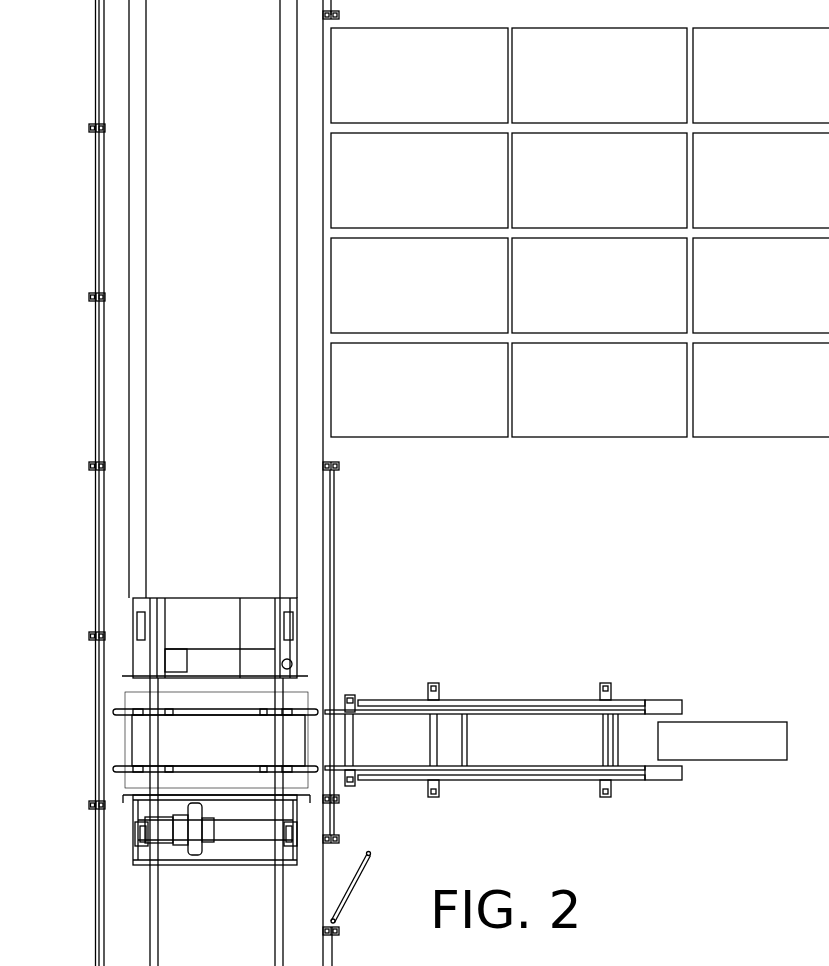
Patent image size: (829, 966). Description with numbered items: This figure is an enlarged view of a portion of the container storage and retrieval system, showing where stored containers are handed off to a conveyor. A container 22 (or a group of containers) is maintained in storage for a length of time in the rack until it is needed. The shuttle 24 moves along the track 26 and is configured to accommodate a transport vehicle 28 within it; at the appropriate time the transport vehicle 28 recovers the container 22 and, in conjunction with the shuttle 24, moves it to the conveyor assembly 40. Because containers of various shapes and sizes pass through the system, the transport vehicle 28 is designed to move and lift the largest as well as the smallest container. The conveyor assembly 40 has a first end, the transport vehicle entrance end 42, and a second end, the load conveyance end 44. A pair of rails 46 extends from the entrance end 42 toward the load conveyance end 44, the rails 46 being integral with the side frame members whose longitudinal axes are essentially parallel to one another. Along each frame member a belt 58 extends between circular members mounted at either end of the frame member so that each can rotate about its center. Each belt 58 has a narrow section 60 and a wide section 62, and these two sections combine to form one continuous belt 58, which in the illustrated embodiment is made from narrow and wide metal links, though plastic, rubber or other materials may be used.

The container 22 is at (447, 404).
The shuttle 24 is at (186, 592).
The track 26 is at (138, 287).
The transport vehicle 28 is at (124, 736).
The conveyor assembly 40 is at (530, 728).
The transport vehicle entrance end 42 is at (342, 690).
The load conveyance end 44 is at (636, 738).
The rails 46 is at (337, 712).
The belt 58 is at (583, 692).
The narrow section 60 is at (627, 700).
The wide section 62 is at (658, 700).